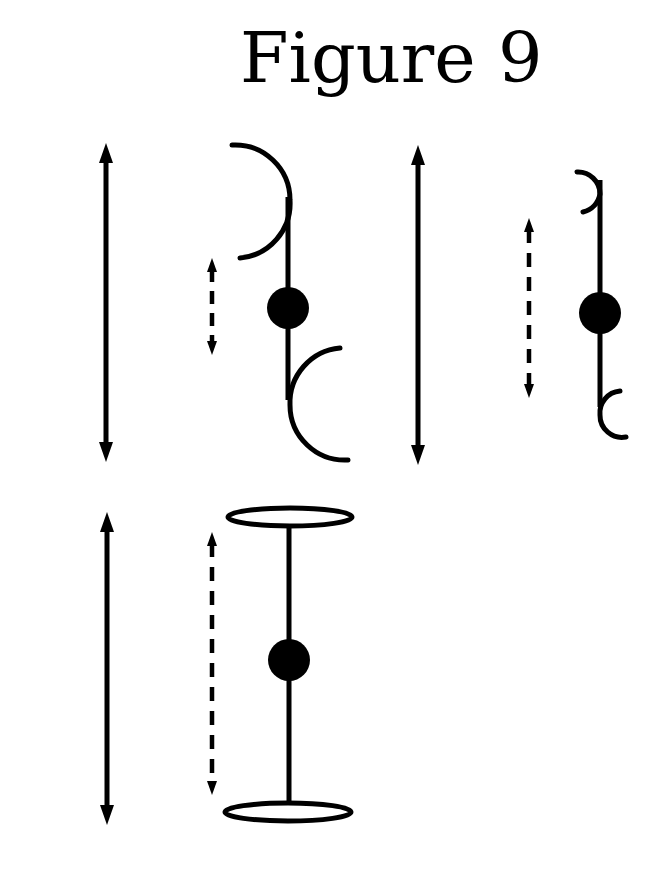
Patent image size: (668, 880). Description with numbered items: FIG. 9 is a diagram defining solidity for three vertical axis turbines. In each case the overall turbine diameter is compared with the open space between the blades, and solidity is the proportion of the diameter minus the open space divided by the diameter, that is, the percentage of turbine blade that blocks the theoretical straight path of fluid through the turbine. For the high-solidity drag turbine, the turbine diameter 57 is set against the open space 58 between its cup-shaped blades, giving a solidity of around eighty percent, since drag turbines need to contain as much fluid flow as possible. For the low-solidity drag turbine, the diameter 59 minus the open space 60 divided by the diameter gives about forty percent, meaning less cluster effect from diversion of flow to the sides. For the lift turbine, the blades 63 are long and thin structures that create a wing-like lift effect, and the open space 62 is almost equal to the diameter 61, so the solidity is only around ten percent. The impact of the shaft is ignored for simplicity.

The turbine diameter 57 is at (73, 302).
The open space between the blades 58 is at (191, 306).
The turbine diameter 59 is at (385, 305).
The open space between the blades 60 is at (506, 308).
The turbine diameter 61 is at (74, 661).
The open space between the blades 62 is at (191, 663).
The blades 63 is at (315, 816).